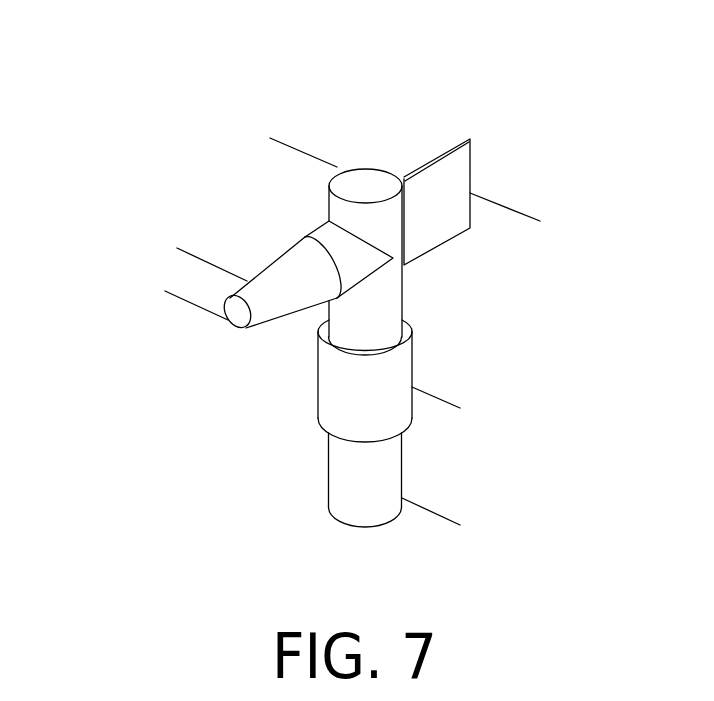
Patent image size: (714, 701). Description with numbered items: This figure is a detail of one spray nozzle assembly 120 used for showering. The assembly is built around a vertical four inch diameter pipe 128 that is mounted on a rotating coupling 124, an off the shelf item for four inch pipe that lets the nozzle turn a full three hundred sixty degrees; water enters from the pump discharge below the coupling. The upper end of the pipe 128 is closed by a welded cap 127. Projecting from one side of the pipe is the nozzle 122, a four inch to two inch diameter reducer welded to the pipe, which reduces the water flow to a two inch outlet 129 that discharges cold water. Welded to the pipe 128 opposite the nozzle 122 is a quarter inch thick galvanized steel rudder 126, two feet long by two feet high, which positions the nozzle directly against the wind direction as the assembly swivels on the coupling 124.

The spray nozzle assembly 120 is at (474, 89).
The nozzle 122 is at (283, 320).
The rotating coupling 124 is at (412, 370).
The rudder 126 is at (468, 183).
The welded cap 127 is at (372, 162).
The pipe 128 is at (402, 287).
The outlet 129 is at (243, 332).